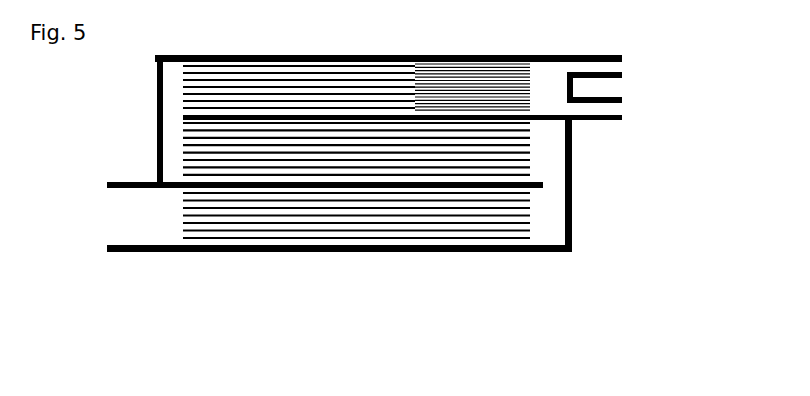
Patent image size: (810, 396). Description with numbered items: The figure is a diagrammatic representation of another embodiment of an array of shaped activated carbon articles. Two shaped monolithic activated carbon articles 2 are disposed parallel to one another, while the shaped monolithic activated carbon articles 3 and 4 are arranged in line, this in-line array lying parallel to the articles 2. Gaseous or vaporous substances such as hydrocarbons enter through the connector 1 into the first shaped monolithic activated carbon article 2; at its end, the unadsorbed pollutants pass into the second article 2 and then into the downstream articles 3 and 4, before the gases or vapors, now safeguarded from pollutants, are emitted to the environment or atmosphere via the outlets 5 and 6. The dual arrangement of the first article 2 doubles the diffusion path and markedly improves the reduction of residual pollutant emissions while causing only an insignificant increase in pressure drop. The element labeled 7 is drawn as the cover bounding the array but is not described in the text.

The connector 1 is at (143, 208).
The shaped monolithic activated carbon article 2 is at (287, 207).
The shaped monolithic activated carbon article 3 is at (368, 93).
The shaped monolithic activated carbon article 4 is at (495, 78).
The outlet 5 is at (593, 108).
The outlet 6 is at (593, 65).
The cover plate 7 is at (300, 57).